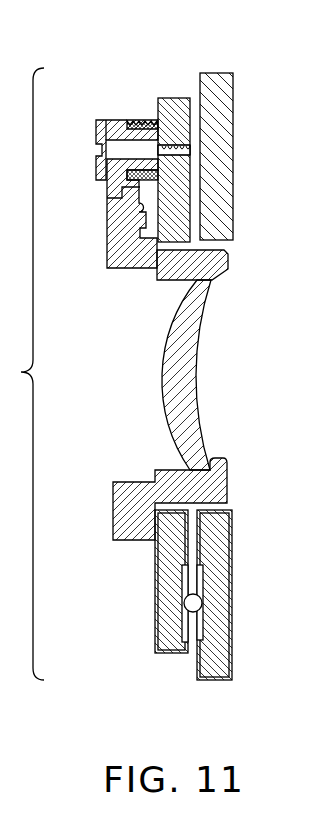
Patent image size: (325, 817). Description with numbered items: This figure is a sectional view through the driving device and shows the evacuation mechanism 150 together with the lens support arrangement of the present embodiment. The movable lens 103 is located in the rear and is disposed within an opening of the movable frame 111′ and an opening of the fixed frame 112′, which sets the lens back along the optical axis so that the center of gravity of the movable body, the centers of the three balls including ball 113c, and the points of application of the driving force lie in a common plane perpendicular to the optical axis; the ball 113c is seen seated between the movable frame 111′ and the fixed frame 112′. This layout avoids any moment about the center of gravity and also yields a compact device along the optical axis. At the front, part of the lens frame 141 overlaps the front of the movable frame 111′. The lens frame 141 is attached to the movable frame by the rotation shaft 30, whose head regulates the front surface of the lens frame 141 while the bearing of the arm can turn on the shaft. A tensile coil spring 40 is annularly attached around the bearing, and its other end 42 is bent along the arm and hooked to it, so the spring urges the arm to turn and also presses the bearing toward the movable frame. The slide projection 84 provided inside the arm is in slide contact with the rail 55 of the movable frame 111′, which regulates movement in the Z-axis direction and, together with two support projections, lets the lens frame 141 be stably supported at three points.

The evacuation mechanism 150 is at (176, 70).
The rotation shaft 30 is at (95, 118).
The tensile coil spring 40 is at (140, 120).
The slide projection 84 is at (138, 192).
The other end of the tensile coil spring 42 is at (100, 214).
The rail 55 is at (152, 252).
The movable lens 103 is at (197, 374).
The lens frame 141 is at (229, 497).
The movable frame 111′ is at (167, 565).
The fixed frame 112′ is at (232, 580).
The ball 113c is at (189, 604).